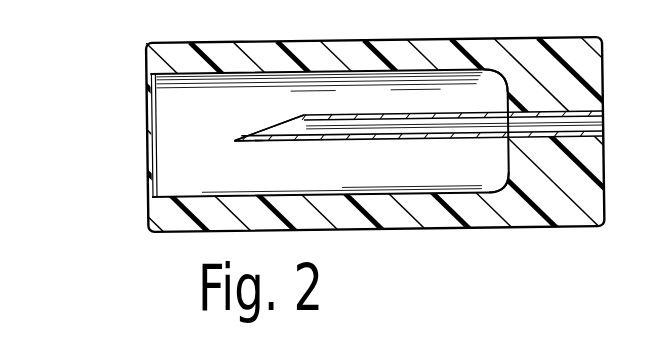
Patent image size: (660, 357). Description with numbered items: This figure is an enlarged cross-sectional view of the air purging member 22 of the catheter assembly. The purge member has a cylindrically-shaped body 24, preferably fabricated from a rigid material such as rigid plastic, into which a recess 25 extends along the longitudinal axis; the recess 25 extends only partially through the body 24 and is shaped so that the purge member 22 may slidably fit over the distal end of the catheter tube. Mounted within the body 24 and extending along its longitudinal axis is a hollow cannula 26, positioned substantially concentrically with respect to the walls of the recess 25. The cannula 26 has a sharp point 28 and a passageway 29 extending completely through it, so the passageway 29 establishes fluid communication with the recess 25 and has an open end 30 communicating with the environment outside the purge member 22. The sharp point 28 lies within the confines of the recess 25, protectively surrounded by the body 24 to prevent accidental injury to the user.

The air purging member 22 is at (419, 42).
The cylindrically-shaped body 24 is at (505, 62).
The recess 25 is at (158, 178).
The hollow cannula 26 is at (382, 118).
The sharp point 28 is at (233, 142).
The passageway 29 is at (450, 143).
The open end 30 is at (603, 128).